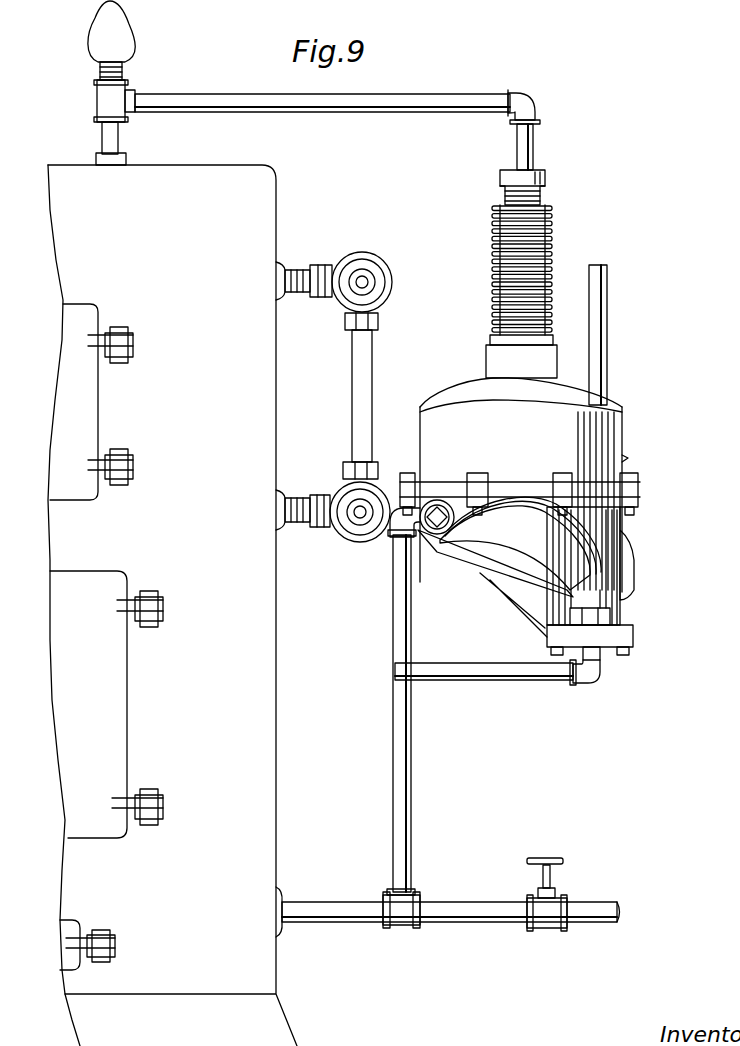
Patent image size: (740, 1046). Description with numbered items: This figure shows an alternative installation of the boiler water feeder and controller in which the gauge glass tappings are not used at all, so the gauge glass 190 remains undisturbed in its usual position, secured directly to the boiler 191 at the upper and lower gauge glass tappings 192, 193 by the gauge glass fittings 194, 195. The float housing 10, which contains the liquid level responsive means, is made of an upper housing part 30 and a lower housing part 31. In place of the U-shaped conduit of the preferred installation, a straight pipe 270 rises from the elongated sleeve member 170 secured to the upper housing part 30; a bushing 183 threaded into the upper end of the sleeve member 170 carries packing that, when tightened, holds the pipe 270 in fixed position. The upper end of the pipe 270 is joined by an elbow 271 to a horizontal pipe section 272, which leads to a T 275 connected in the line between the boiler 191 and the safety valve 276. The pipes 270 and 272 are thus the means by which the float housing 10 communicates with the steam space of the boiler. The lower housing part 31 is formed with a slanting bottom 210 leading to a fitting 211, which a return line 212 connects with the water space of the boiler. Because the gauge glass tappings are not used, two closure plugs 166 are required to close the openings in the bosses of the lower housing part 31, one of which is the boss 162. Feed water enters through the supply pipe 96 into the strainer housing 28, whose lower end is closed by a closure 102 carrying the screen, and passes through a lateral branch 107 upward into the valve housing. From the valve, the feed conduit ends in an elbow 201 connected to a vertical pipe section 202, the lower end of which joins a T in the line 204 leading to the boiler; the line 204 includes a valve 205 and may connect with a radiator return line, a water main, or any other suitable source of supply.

The safety valve 276 is at (98, 52).
The T 275 is at (97, 100).
The horizontal pipe section 272 is at (505, 98).
The elbow 271 is at (530, 102).
The straight pipe 270 is at (533, 134).
The bushing 183 is at (548, 180).
The sleeve member 170 is at (555, 234).
The supply pipe 96 is at (604, 266).
The boiler 191 is at (266, 204).
The upper gauge glass tapping 192 is at (288, 268).
The gauge glass fitting 194 is at (330, 262).
The gauge glass 190 is at (366, 372).
The upper housing part 30 is at (456, 394).
The closure plug 166 is at (437, 500).
The boss 162 is at (466, 484).
The float housing 10 is at (624, 462).
The lower housing part 31 is at (600, 526).
The strainer housing 28 is at (623, 572).
The fitting 211 is at (612, 610).
The closure 102 is at (636, 643).
The lateral branch 107 is at (527, 606).
The return line 212 is at (526, 666).
The slanting bottom 210 is at (450, 548).
The vertical pipe section 202 is at (410, 622).
The elbow 201 is at (392, 538).
The gauge glass fitting 195 is at (318, 530).
The lower gauge glass tapping 193 is at (283, 530).
The valve 205 is at (530, 896).
The line 204 is at (508, 903).